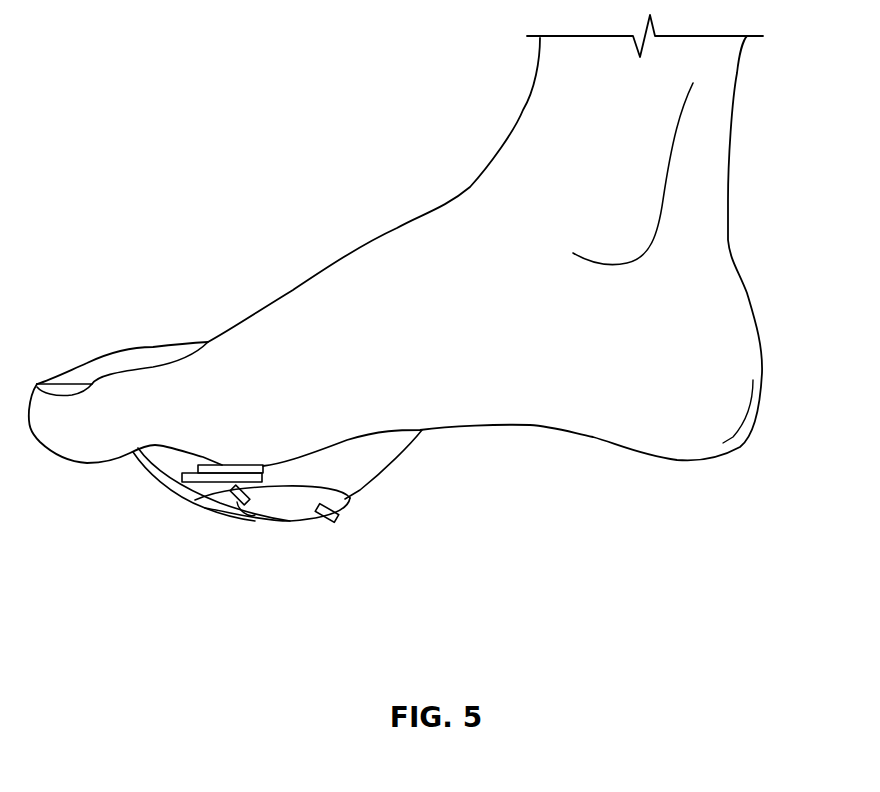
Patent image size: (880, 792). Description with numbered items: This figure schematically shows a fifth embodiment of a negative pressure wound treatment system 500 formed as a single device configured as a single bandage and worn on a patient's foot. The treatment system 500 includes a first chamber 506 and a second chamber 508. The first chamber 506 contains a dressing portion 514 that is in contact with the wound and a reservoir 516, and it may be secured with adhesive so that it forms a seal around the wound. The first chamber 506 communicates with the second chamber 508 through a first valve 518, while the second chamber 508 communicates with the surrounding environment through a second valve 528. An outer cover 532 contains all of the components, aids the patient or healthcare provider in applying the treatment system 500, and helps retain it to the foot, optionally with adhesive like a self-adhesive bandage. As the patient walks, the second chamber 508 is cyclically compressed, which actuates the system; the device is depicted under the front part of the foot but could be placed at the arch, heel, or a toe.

The negative pressure wound treatment system 500 is at (291, 607).
The first chamber 506 is at (157, 470).
The second chamber 508 is at (347, 495).
The dressing portion 514 is at (255, 515).
The reservoir 516 is at (205, 485).
The first valve 518 is at (207, 483).
The second valve 528 is at (325, 518).
The outer cover 532 is at (410, 450).